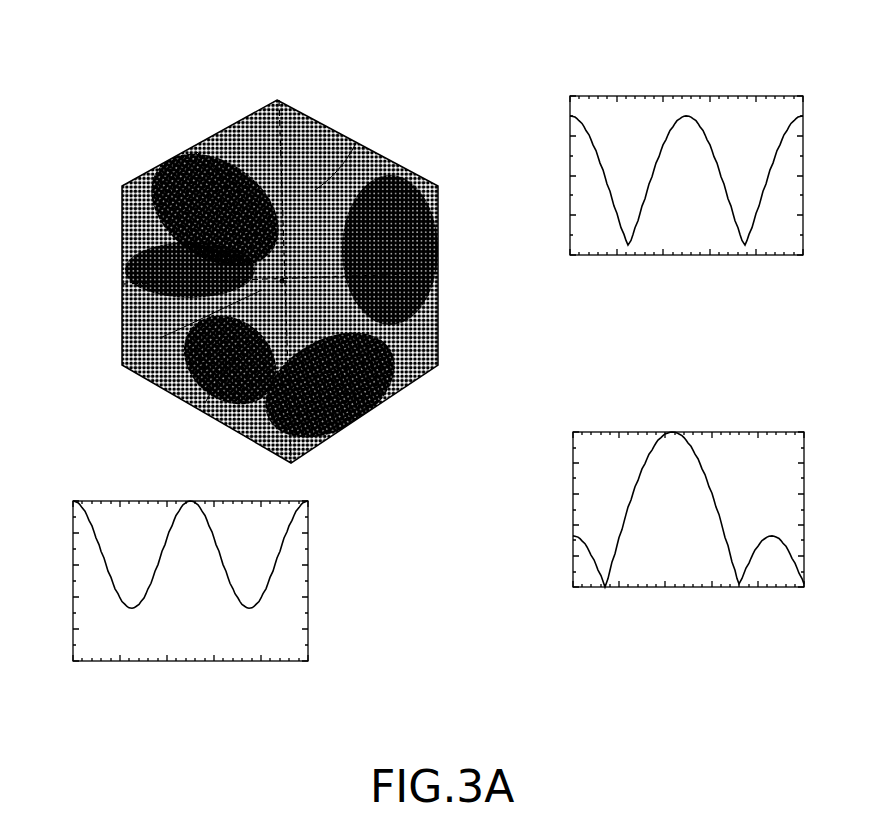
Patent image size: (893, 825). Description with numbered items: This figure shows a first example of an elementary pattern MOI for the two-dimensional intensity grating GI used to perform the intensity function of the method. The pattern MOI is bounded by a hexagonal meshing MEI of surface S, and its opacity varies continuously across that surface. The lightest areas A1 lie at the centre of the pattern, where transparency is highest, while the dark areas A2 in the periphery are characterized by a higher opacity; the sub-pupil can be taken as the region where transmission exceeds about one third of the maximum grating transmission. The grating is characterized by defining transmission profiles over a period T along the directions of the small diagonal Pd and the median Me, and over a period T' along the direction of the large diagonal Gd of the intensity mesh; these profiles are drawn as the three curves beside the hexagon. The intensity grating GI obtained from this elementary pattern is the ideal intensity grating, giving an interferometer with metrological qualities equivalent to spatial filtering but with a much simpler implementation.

The intensity grating GI is at (285, 80).
The dark areas A2 is at (197, 152).
The elementary pattern MOI is at (282, 281).
The lightest areas A1 is at (160, 338).
The hexagonal meshing MEI is at (366, 406).
The small diagonal Pd is at (387, 160).
The large diagonal Gd is at (439, 272).
The median Me is at (291, 463).